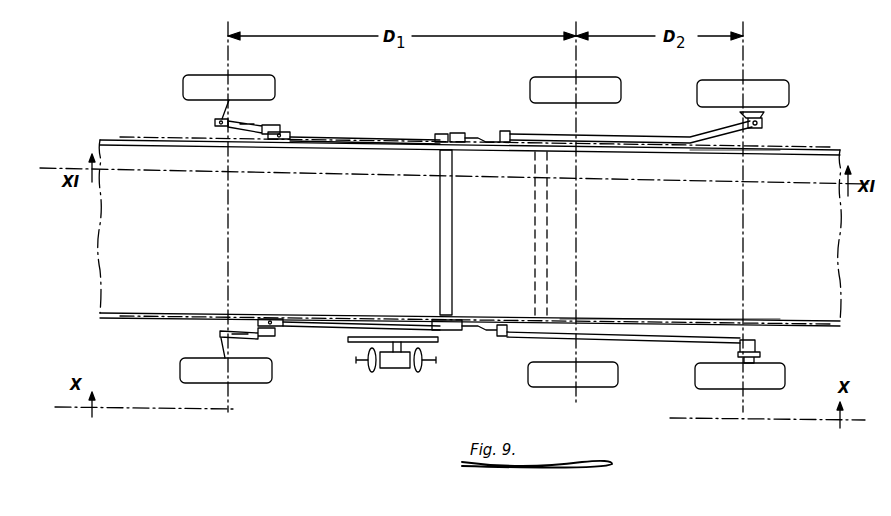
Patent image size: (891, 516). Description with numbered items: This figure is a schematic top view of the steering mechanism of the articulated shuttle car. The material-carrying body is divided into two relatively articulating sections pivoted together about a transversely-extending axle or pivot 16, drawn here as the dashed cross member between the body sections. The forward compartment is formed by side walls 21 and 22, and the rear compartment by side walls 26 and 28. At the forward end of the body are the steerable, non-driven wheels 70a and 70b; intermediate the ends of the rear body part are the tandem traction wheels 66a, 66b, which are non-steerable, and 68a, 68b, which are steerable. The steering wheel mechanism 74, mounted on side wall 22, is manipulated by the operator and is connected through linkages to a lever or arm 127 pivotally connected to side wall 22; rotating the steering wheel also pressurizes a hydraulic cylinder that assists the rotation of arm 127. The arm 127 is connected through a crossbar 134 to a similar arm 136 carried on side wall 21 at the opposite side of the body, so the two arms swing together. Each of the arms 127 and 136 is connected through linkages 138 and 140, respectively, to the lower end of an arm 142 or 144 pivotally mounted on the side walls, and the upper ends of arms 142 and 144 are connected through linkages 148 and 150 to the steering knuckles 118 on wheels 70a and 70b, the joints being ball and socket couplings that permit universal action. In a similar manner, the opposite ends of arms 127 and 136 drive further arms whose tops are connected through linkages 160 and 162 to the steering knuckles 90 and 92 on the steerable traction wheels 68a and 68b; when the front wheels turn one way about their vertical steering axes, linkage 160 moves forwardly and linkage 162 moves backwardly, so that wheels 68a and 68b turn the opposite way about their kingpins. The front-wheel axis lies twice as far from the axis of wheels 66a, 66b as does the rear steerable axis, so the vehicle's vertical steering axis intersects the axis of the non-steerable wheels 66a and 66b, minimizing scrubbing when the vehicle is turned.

The transversely-extending axle or pivot 16 is at (547, 262).
The side wall 21 is at (402, 147).
The side wall 22 is at (368, 321).
The side wall 26 is at (716, 154).
The side wall 28 is at (663, 320).
The tandem traction wheel 66a is at (544, 378).
The tandem traction wheel 66b is at (596, 83).
The tandem traction wheel 68a is at (746, 386).
The tandem traction wheel 68b is at (767, 86).
The steerable non-driven wheel 70a is at (256, 374).
The steerable non-driven wheel 70b is at (204, 80).
The steering wheel mechanism 74 is at (394, 366).
The steering knuckle 90 is at (756, 352).
The steering knuckle 92 is at (768, 122).
The steering knuckle 118 is at (214, 116).
The lever or arm 127 is at (445, 331).
The crossbar 134 is at (440, 225).
The arm 136 is at (438, 133).
The linkage 138 is at (361, 334).
The linkage 140 is at (356, 137).
The arm 142 is at (270, 319).
The arm 144 is at (270, 139).
The linkage 148 is at (240, 336).
The linkage 150 is at (262, 124).
The linkage 160 is at (641, 342).
The linkage 162 is at (650, 137).